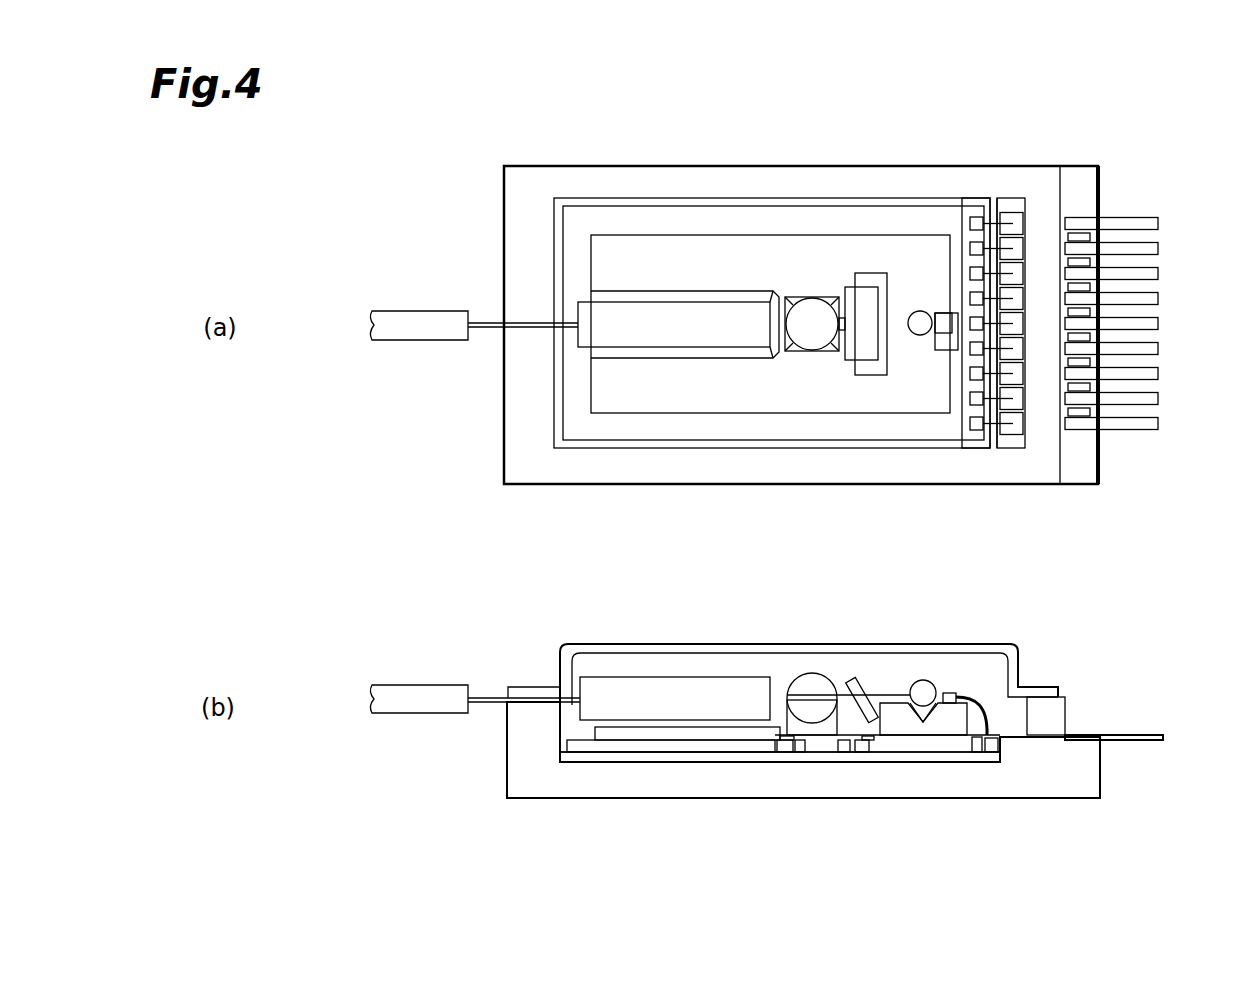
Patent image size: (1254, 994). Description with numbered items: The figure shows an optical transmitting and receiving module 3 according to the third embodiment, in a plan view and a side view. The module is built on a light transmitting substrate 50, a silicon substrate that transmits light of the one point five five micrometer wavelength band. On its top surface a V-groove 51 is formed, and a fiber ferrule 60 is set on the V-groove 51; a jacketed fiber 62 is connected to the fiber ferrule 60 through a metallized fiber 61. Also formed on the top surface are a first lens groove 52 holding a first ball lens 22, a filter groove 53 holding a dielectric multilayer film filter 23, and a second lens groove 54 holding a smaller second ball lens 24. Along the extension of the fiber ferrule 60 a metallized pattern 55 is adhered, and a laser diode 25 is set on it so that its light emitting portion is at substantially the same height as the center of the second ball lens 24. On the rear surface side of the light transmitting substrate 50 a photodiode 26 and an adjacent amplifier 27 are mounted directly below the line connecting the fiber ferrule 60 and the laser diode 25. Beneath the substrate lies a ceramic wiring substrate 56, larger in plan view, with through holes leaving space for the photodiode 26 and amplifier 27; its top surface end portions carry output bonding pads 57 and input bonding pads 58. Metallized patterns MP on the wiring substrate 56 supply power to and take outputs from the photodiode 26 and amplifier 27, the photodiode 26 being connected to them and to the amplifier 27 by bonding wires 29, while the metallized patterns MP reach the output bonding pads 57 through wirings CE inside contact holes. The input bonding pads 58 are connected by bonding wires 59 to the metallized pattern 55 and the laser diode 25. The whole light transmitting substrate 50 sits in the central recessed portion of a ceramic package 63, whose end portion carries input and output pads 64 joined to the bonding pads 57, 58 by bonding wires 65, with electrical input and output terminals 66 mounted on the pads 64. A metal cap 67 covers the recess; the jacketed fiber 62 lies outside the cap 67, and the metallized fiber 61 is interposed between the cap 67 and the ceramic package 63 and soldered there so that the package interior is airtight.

The optical transmitting and receiving module 3 is at (1172, 188).
The first ball lens 22 is at (812, 332).
The dielectric multilayer film filter 23 is at (862, 341).
The second ball lens 24 is at (920, 331).
The laser diode 25 is at (940, 314).
The photodiode 26 is at (845, 753).
The amplifier 27 is at (790, 753).
The bonding wires 29 is at (796, 753).
The light transmitting substrate 50 is at (794, 250).
The V-groove 51 is at (641, 300).
The first lens groove 52 is at (790, 298).
The filter groove 53 is at (876, 285).
The second lens groove 54 is at (950, 740).
The metallized pattern 55 is at (942, 348).
The ceramic wiring substrate 56 is at (643, 207).
The output bonding pads 57 is at (962, 300).
The input bonding pads 58 is at (975, 290).
The bonding wires 59 is at (968, 400).
The fiber ferrule 60 is at (690, 325).
The metallized fiber 61 is at (481, 328).
The jacketed fiber 62 is at (432, 318).
The ceramic package 63 is at (1045, 800).
The input and output pads 64 is at (1072, 267).
The bonding wires 65 is at (1012, 240).
The electrical input and output terminals 66 is at (1158, 224).
The cap 67 is at (640, 643).
The metallized patterns MP is at (782, 746).
The wirings CE is at (978, 744).